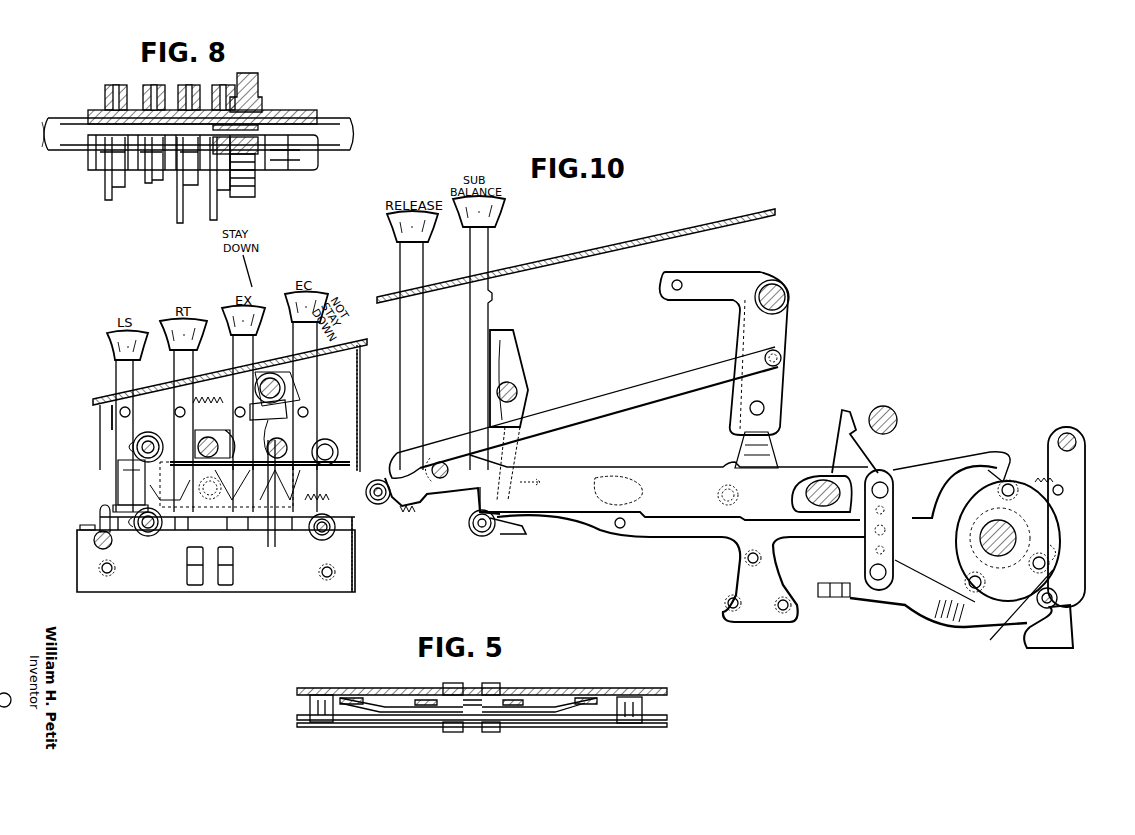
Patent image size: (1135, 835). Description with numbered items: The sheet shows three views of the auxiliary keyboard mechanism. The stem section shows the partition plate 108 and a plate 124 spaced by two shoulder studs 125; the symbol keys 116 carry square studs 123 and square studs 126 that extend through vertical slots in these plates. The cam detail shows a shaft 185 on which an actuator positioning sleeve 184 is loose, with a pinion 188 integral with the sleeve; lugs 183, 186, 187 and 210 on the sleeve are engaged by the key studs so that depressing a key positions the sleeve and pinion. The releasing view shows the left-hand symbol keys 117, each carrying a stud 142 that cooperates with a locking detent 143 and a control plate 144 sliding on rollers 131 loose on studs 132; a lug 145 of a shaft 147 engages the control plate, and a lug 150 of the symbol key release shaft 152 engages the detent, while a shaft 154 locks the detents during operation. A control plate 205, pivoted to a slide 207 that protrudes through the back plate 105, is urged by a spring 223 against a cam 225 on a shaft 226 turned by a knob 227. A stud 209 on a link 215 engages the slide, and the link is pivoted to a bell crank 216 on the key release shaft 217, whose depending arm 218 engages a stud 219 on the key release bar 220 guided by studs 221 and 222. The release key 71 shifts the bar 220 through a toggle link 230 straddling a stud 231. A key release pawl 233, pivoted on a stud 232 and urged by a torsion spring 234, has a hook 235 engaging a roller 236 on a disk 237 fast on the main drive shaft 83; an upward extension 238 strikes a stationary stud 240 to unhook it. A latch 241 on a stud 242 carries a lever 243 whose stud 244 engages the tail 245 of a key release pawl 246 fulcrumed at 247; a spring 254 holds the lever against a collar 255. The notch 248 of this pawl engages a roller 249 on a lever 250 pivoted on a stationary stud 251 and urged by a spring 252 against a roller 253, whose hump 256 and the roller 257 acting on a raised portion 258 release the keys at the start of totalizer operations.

In FIG. 8, the shaft 185 is at (72, 122).
In FIG. 8, the actuator positioning sleeve 184 is at (278, 112).
In FIG. 8, the pinion 188 is at (256, 80).
In FIG. 8, the lug 210 is at (105, 187).
In FIG. 8, the lug 187 is at (145, 180).
In FIG. 8, the lug 186 is at (177, 217).
In FIG. 8, the lug 183 is at (217, 207).
In FIG. 10, the symbol key 117 is at (107, 334).
In FIG. 10, the release key 71 is at (397, 229).
In FIG. 10, the back plate 105 is at (362, 350).
In FIG. 10, the knob 227 is at (272, 372).
In FIG. 10, the shaft 226 is at (283, 385).
In FIG. 10, the cam 225 is at (287, 402).
In FIG. 10, the symbol key release shaft 152 is at (288, 440).
In FIG. 10, the control plate 205 is at (215, 430).
In FIG. 10, the shaft 154 is at (338, 448).
In FIG. 10, the roller 131 is at (146, 430).
In FIG. 10, the stud 132 is at (138, 456).
In FIG. 10, the stud 142 is at (118, 463).
In FIG. 10, the locking detent 143 is at (113, 500).
In FIG. 10, the lug 145 is at (100, 513).
In FIG. 10, the shaft 147 is at (95, 545).
In FIG. 10, the spring 223 is at (170, 492).
In FIG. 10, the lug 150 is at (270, 520).
In FIG. 10, the control plate 144 is at (316, 537).
In FIG. 10, the plate 124 is at (248, 588).
In FIG. 5, the plate 124 is at (385, 722).
In FIG. 10, the slide 207 is at (378, 505).
In FIG. 10, the stud 209 is at (418, 508).
In FIG. 10, the link 215 is at (545, 410).
In FIG. 10, the stud 221 is at (440, 462).
In FIG. 10, the latch 241 is at (515, 345).
In FIG. 10, the stud 242 is at (516, 385).
In FIG. 10, the key release bar 220 is at (655, 470).
In FIG. 10, the spring 254 is at (625, 490).
In FIG. 10, the toggle link 230 is at (470, 528).
In FIG. 10, the stud 231 is at (518, 526).
In FIG. 10, the lever 243 is at (665, 538).
In FIG. 10, the stud 244 is at (783, 612).
In FIG. 10, the tail 245 is at (822, 594).
In FIG. 10, the collar 255 is at (806, 493).
In FIG. 10, the stud 222 is at (826, 478).
In FIG. 10, the bell crank 216 is at (745, 335).
In FIG. 10, the key release shaft 217 is at (790, 297).
In FIG. 10, the depending arm 218 is at (783, 363).
In FIG. 10, the stud 219 is at (749, 409).
In FIG. 10, the upward extension 238 is at (838, 430).
In FIG. 10, the stationary stud 240 is at (882, 406).
In FIG. 10, the stud 232 is at (882, 480).
In FIG. 10, the torsion spring 234 is at (866, 544).
In FIG. 10, the fulcrum 247 is at (868, 572).
In FIG. 10, the key release pawl 233 is at (940, 460).
In FIG. 10, the hook 235 is at (1003, 458).
In FIG. 10, the disk 237 is at (957, 538).
In FIG. 10, the main drive shaft 83 is at (1010, 522).
In FIG. 10, the roller 236 is at (998, 490).
In FIG. 10, the roller 253 is at (1030, 568).
In FIG. 10, the roller 257 is at (966, 578).
In FIG. 10, the hump 256 is at (1060, 540).
In FIG. 10, the raised portion 258 is at (1040, 603).
In FIG. 10, the lever 250 is at (1082, 495).
In FIG. 10, the stationary stud 251 is at (1060, 433).
In FIG. 10, the spring 252 is at (1045, 480).
In FIG. 10, the key release pawl 246 is at (940, 624).
In FIG. 10, the roller 249 is at (992, 640).
In FIG. 10, the notch 248 is at (1045, 648).
In FIG. 5, the partition plate 108 is at (297, 690).
In FIG. 5, the shoulder stud 125 is at (310, 703).
In FIG. 5, the symbol key 116 is at (350, 696).
In FIG. 5, the square stud 126 is at (485, 683).
In FIG. 5, the square stud 123 is at (485, 732).